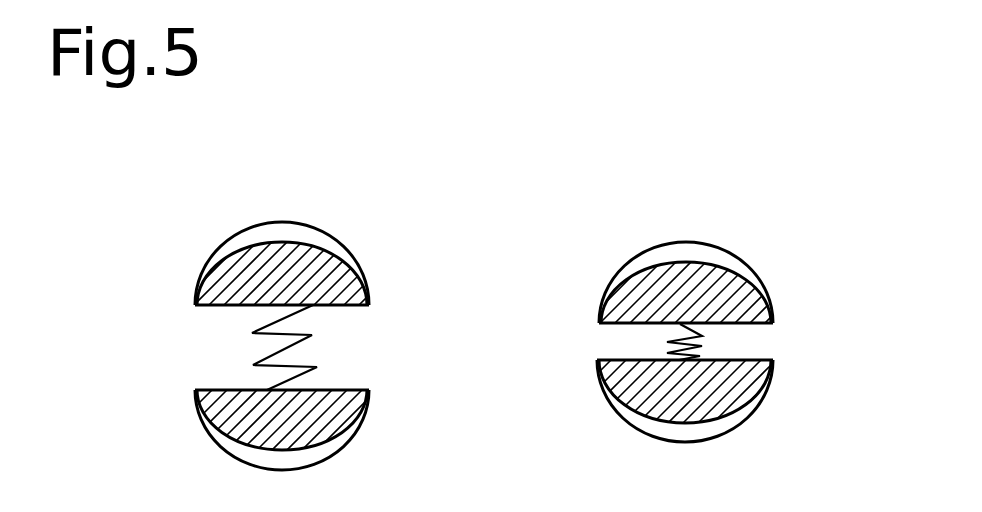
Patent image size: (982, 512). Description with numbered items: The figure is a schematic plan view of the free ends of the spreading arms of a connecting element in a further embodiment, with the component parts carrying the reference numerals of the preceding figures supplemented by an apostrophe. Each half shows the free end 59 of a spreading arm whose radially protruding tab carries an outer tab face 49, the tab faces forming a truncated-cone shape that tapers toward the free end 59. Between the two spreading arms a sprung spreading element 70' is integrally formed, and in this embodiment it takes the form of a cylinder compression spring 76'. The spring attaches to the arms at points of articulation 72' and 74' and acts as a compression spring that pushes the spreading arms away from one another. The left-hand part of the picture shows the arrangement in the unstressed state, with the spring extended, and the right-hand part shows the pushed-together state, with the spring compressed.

The outer tab face 49 is at (275, 242).
The free end of spreading arm 59 is at (303, 270).
The sprung spreading element 70' is at (477, 333).
The point of articulation 72' is at (444, 303).
The point of articulation 74' is at (531, 361).
The cylinder compression spring 76' is at (147, 389).